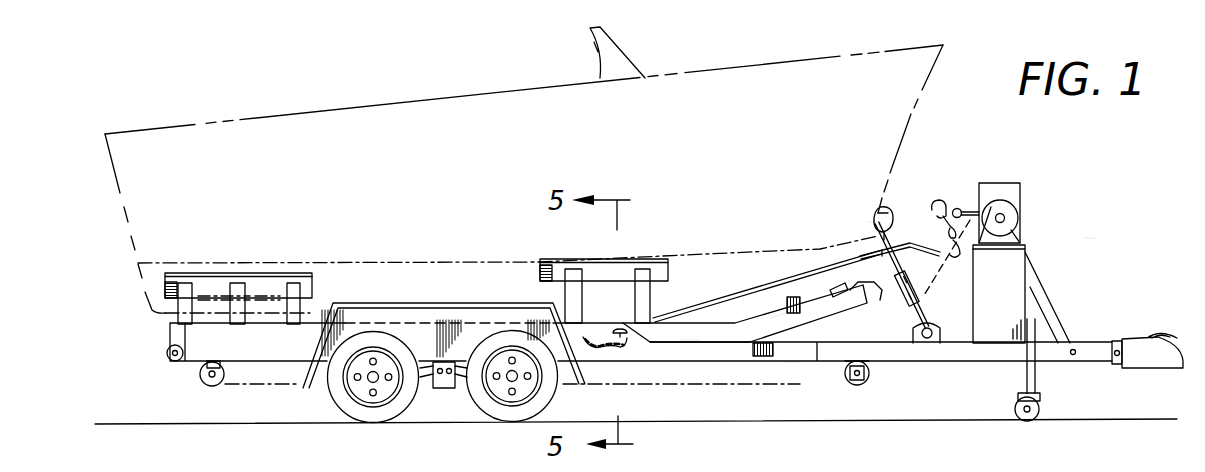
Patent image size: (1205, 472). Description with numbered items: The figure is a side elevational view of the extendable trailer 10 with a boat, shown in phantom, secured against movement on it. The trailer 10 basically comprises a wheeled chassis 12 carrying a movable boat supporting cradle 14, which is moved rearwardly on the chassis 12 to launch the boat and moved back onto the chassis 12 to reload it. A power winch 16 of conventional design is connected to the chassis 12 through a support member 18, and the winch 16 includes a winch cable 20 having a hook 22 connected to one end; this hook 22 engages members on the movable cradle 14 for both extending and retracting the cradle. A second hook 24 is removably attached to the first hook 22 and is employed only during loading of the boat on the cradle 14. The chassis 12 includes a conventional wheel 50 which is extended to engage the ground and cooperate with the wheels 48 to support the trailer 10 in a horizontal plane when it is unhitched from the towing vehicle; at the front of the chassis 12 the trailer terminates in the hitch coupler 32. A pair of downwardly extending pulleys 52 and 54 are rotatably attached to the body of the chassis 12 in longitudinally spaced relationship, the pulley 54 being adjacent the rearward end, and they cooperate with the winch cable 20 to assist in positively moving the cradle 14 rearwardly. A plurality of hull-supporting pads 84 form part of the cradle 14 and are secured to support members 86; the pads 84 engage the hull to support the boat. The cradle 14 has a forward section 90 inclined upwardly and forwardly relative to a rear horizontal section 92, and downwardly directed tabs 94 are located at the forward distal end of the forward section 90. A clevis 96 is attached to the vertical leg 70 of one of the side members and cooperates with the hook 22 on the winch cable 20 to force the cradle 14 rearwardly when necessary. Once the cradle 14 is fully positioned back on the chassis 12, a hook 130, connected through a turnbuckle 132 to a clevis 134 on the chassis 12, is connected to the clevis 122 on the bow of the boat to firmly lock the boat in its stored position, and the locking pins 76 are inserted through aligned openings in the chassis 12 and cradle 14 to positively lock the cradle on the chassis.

The extendable trailer 10 is at (1094, 228).
The wheeled chassis 12 is at (942, 370).
The boat supporting cradle 14 is at (729, 312).
The power winch 16 is at (1014, 215).
The support member 18 is at (1013, 269).
The winch cable 20 is at (728, 383).
The hook 22 is at (940, 200).
The second hook 24 is at (968, 318).
The hitch coupler 32 is at (1143, 366).
The wheels 48 is at (482, 399).
The wheel 50 is at (1042, 400).
The pulley 52 is at (866, 380).
The pulley 54 is at (212, 387).
The vertical leg 70 is at (758, 320).
The locking pins 76 is at (627, 350).
The hull-supporting pads 84 is at (175, 277).
The support members 86 is at (236, 314).
The forward section 90 is at (792, 369).
The rear horizontal section 92 is at (687, 340).
The downwardly directed tabs 94 is at (912, 312).
The clevis 96 is at (833, 283).
The clevis 122 is at (890, 210).
The hook 130 is at (907, 207).
The turnbuckle 132 is at (977, 310).
The clevis 134 is at (880, 362).